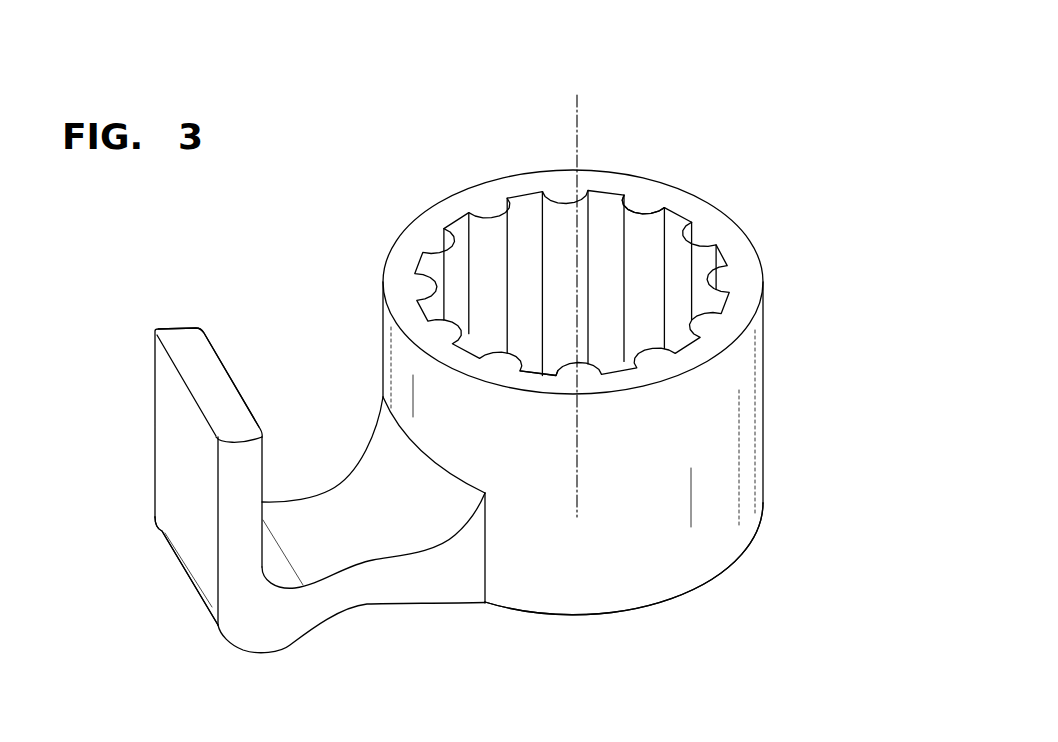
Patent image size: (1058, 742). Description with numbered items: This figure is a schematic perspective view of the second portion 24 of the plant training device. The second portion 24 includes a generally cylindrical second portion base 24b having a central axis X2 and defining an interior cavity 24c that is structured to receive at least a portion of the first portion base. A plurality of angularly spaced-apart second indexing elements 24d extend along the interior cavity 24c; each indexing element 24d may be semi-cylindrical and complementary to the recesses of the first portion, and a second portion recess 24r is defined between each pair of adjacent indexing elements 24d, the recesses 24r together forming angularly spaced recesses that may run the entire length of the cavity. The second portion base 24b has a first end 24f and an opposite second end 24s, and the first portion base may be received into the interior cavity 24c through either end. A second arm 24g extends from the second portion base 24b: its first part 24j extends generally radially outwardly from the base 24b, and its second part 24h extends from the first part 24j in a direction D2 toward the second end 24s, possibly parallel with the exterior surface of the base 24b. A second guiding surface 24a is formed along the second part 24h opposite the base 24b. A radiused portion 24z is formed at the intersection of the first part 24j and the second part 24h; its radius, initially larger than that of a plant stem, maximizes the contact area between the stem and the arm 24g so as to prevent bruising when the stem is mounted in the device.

The second portion 24 is at (823, 252).
The second guiding surface 24a is at (233, 380).
The second portion base 24b is at (720, 440).
The interior cavity 24c is at (527, 196).
The second indexing elements 24d is at (563, 267).
The first end 24f is at (687, 597).
The second arm 24g is at (373, 563).
The second part of the second arm 24h is at (155, 418).
The first part of the second arm 24j is at (393, 587).
The second portion recess 24r is at (548, 377).
The second end 24s is at (642, 203).
The radiused portion 24z is at (222, 626).
The central axis X2 is at (580, 129).
The direction D2 is at (88, 472).